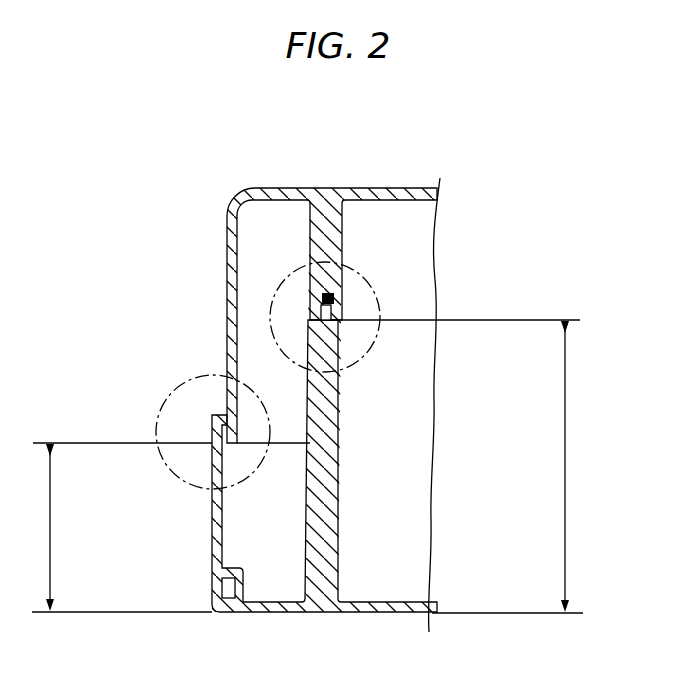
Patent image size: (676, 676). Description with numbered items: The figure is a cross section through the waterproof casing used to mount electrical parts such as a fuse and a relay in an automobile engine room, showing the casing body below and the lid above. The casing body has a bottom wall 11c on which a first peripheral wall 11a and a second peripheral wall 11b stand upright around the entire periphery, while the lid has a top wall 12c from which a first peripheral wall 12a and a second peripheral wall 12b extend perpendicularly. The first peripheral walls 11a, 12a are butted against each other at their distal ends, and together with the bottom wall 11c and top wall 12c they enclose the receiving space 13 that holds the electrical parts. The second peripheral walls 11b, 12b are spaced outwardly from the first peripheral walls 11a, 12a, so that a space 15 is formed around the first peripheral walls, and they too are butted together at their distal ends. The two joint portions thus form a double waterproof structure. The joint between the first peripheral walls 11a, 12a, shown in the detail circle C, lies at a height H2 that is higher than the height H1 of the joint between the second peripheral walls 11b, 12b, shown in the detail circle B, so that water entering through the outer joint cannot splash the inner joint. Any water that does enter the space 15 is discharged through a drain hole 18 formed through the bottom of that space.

The first peripheral wall 12a is at (340, 235).
The second peripheral wall 12b is at (227, 298).
The top wall 12c is at (412, 188).
The first peripheral wall 11a is at (340, 530).
The second peripheral wall 11b is at (212, 543).
The bottom wall 11c is at (358, 612).
The receiving space 13 is at (420, 428).
The space 15 is at (258, 238).
The drain hole 18 is at (226, 590).
The detail circle B is at (185, 478).
The detail circle C is at (376, 292).
The position of joint portion between second peripheral walls H1 is at (115, 527).
The position of joint portion between first peripheral walls H2 is at (467, 466).